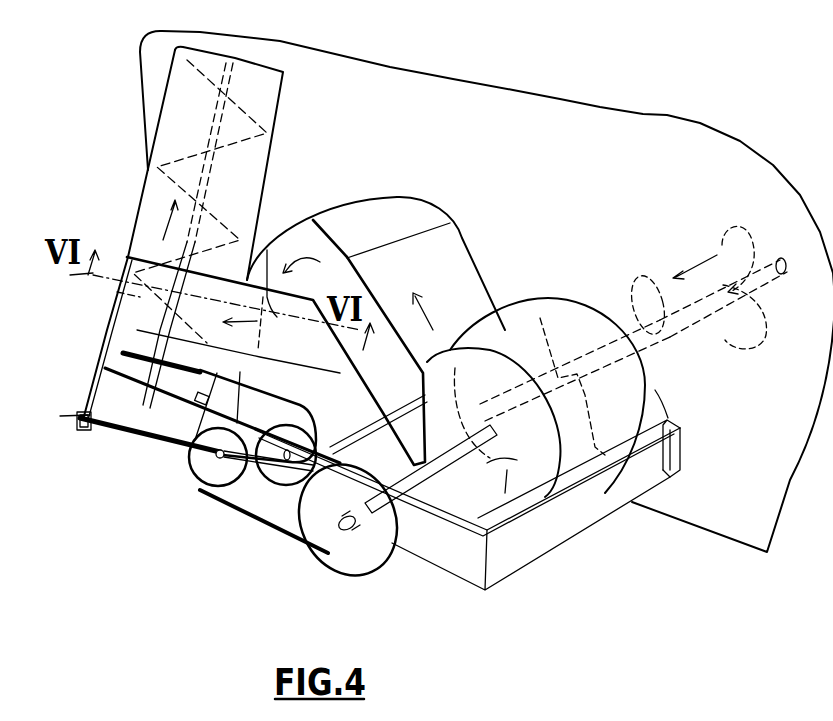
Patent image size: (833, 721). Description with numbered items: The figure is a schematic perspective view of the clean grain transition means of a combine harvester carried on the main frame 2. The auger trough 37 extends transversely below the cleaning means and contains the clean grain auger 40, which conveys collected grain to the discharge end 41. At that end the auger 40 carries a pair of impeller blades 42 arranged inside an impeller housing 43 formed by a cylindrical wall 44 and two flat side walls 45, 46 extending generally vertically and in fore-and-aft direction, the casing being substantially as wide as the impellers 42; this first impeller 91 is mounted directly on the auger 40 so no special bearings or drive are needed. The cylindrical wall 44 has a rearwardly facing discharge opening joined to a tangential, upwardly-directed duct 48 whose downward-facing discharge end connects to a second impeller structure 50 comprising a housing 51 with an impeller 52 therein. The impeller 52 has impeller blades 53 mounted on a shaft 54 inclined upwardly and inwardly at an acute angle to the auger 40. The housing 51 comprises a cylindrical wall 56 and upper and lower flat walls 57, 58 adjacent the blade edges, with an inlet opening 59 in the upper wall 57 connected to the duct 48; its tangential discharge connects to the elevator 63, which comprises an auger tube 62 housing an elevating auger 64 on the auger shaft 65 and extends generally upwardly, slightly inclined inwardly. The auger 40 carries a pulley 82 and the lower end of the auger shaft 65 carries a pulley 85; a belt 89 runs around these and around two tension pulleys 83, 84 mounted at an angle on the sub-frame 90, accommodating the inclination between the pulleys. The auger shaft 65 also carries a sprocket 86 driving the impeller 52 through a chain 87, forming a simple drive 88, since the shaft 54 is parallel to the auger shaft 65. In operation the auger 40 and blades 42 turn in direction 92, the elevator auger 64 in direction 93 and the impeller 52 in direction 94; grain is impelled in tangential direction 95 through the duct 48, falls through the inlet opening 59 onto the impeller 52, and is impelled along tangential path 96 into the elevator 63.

The main frame 2 is at (674, 520).
The auger trough 37 is at (670, 480).
The clean grain auger 40 is at (737, 360).
The discharge end 41 is at (668, 418).
The impeller blades 42 is at (473, 327).
The impeller housing 43 is at (440, 577).
The cylindrical wall 44 is at (540, 300).
The flat side wall 45 is at (565, 288).
The flat side wall 46 is at (415, 565).
The duct 48 is at (478, 282).
The second impeller structure 50 is at (278, 490).
The housing 51 is at (325, 540).
The impeller 52 is at (247, 280).
The impeller blades 53 is at (178, 470).
The shaft 54 is at (252, 495).
The cylindrical wall 56 is at (325, 572).
The upper flat wall 57 is at (310, 290).
The lower flat wall 58 is at (227, 482).
The inlet opening 59 is at (307, 232).
The auger tube 62 is at (137, 208).
The elevator 63 is at (142, 137).
The elevating auger 64 is at (280, 121).
The auger shaft 65 is at (233, 85).
The pulley 82 is at (350, 577).
The tension pulley 83 is at (212, 478).
The tension pulley 84 is at (250, 500).
The pulley 85 is at (115, 430).
The sprocket 86 is at (123, 357).
The chain 87 is at (175, 440).
The drive 88 is at (305, 398).
The belt 89 is at (300, 535).
The sub-frame 90 is at (120, 455).
The first impeller 91 is at (602, 498).
The drive direction 92 is at (548, 520).
The drive direction 93 is at (105, 371).
The drive direction 94 is at (446, 246).
The tangential direction 95 is at (430, 324).
The tangential path 96 is at (238, 324).